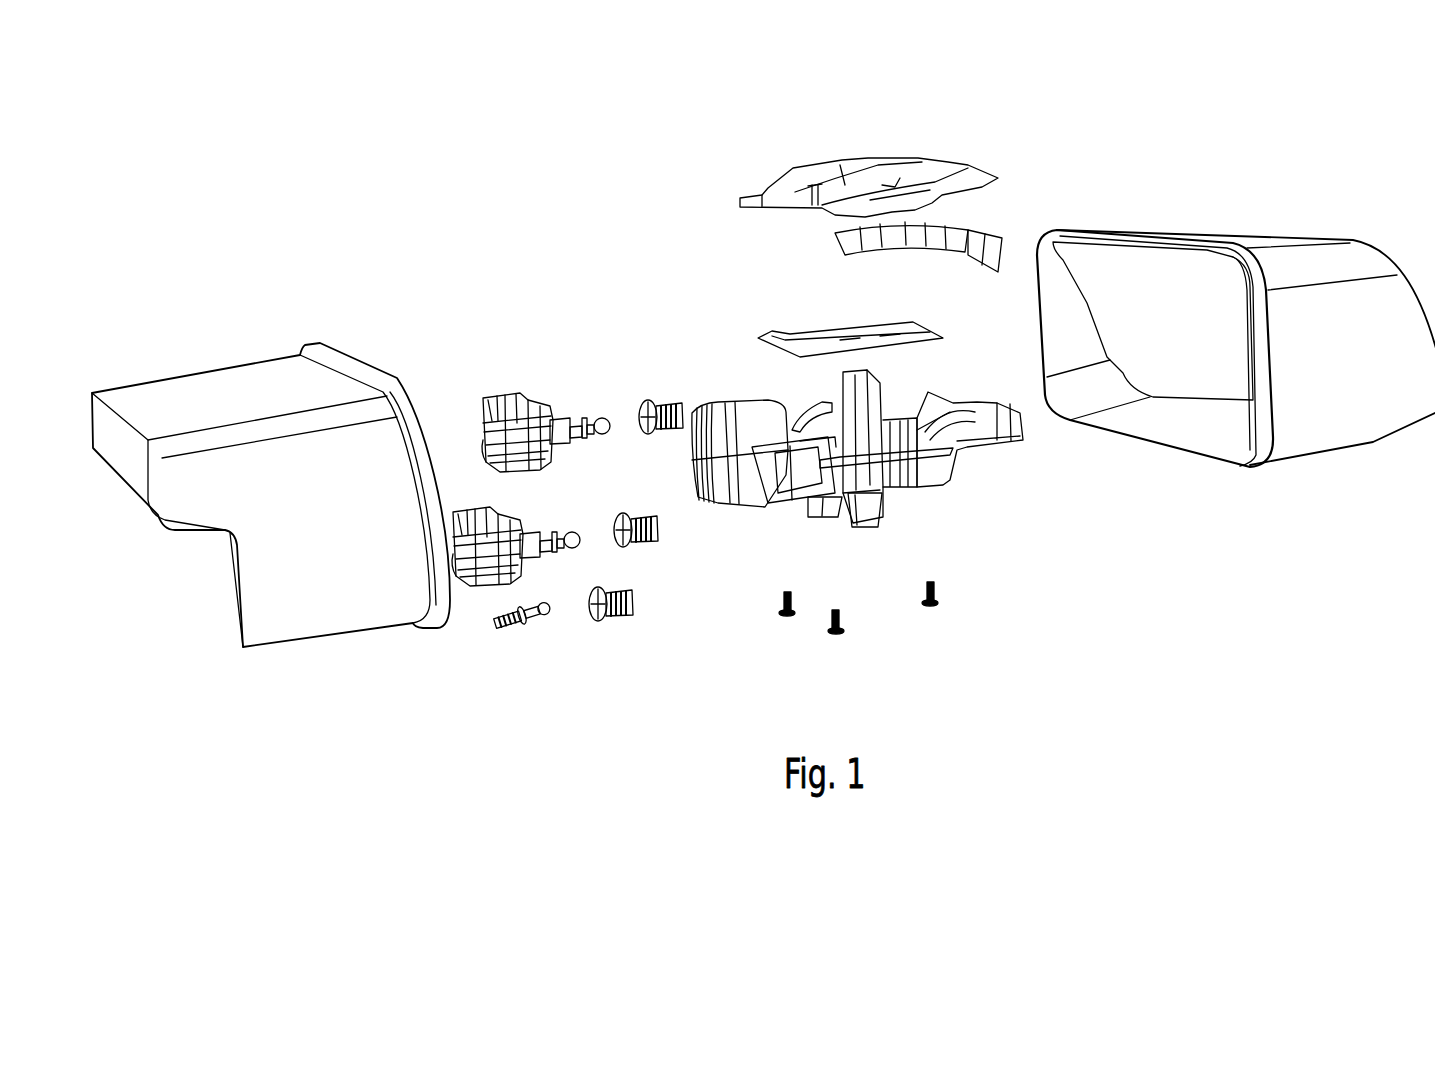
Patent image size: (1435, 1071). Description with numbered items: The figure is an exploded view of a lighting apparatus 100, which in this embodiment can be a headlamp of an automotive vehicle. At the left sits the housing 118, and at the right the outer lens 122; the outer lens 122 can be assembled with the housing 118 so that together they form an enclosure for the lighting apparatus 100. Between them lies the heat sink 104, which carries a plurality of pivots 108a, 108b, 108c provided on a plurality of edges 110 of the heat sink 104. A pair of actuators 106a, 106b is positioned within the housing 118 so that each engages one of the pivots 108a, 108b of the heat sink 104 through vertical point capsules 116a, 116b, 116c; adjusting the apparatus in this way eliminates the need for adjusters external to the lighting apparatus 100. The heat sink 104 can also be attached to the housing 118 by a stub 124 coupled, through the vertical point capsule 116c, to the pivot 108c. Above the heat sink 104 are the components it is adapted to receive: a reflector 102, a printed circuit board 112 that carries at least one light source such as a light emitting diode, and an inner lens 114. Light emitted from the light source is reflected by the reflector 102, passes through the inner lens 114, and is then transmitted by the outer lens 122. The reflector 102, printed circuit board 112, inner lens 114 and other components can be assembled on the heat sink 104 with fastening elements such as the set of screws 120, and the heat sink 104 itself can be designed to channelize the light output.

The lighting apparatus 100 is at (763, 427).
The reflector 102 is at (830, 169).
The heat sink 104 is at (720, 395).
The actuator 106a is at (531, 373).
The actuator 106b is at (498, 464).
The pivot 108a is at (771, 351).
The pivot 108b is at (810, 588).
The pivot 108c is at (876, 574).
The edges of the heatsink 110 is at (887, 470).
The printed circuit board 112 is at (850, 291).
The inner lens 114 is at (967, 209).
The vertical point capsule 116a is at (628, 362).
The vertical point capsule 116b is at (665, 583).
The vertical point capsule 116c is at (615, 657).
The housing 118 is at (271, 537).
The screws 120 is at (914, 608).
The outer lens 122 is at (1236, 399).
The stub 124 is at (523, 666).